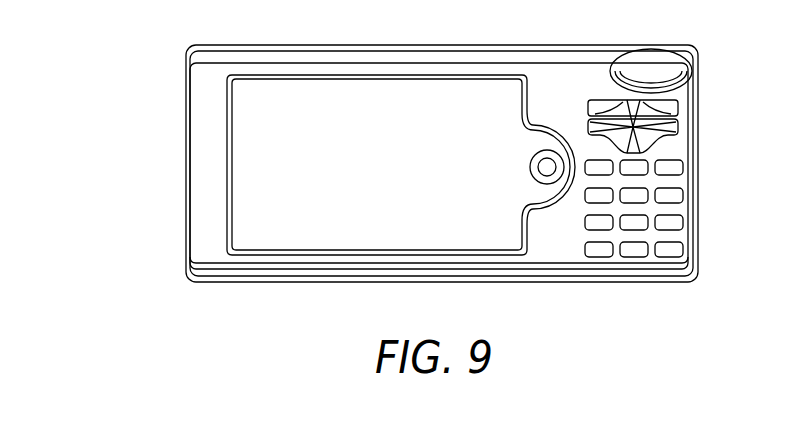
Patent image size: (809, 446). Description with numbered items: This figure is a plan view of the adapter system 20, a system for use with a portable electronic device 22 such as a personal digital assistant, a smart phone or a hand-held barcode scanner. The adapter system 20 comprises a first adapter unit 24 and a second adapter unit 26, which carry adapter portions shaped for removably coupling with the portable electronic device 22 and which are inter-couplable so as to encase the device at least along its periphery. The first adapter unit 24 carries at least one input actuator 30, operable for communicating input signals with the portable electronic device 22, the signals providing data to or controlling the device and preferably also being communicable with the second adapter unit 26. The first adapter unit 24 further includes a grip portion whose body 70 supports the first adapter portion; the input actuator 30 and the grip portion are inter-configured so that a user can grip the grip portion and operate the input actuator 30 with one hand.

The adapter system 20 is at (158, 48).
The portable electronic device 22 is at (315, 212).
The first adapter unit 24 is at (552, 247).
The second adapter unit 26 is at (205, 155).
The input actuator 30 is at (682, 156).
The body 70 is at (598, 83).